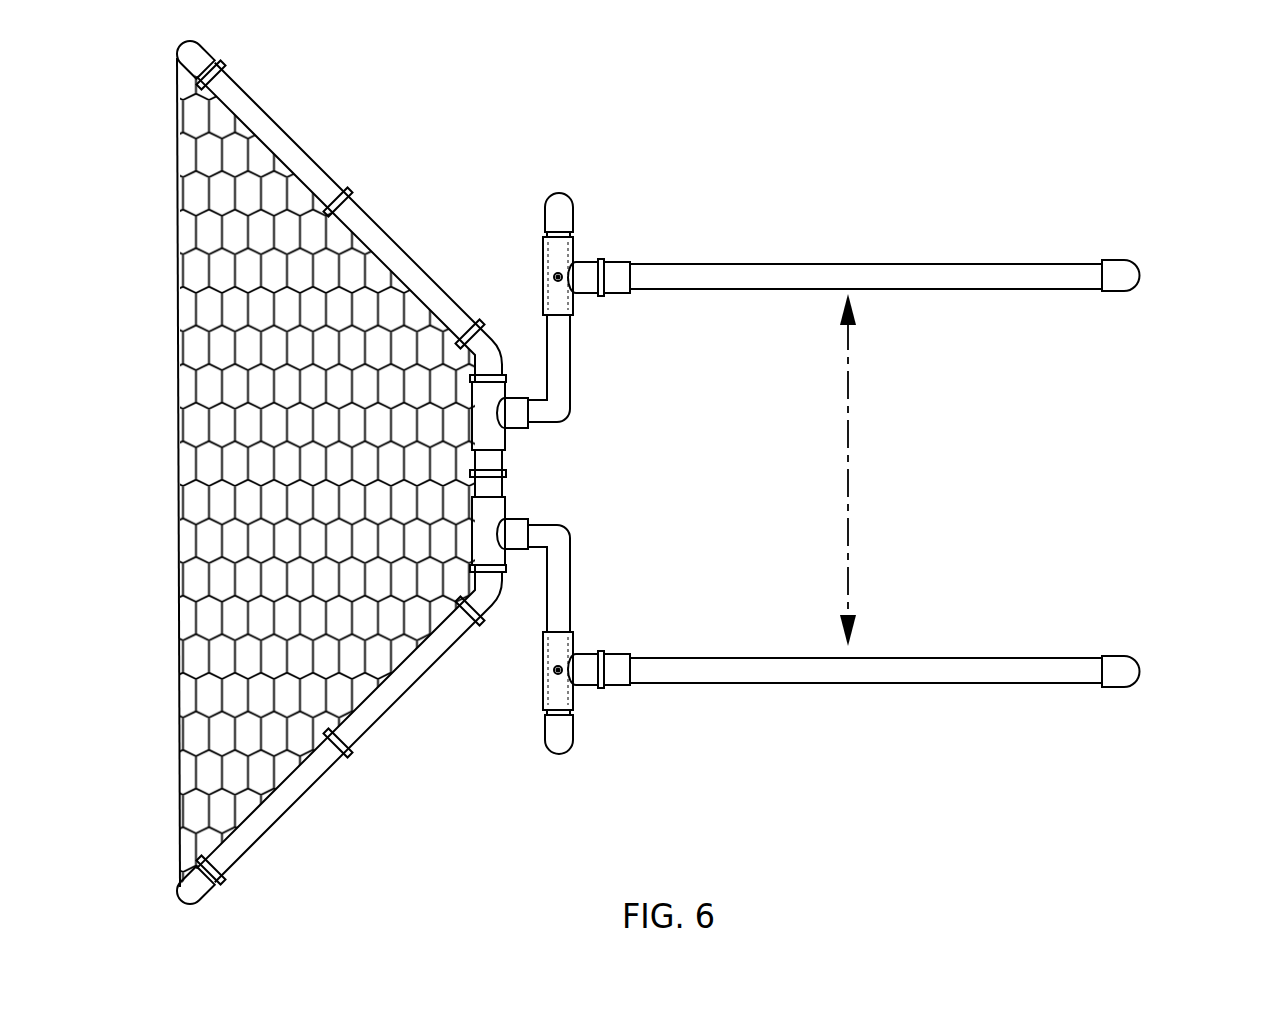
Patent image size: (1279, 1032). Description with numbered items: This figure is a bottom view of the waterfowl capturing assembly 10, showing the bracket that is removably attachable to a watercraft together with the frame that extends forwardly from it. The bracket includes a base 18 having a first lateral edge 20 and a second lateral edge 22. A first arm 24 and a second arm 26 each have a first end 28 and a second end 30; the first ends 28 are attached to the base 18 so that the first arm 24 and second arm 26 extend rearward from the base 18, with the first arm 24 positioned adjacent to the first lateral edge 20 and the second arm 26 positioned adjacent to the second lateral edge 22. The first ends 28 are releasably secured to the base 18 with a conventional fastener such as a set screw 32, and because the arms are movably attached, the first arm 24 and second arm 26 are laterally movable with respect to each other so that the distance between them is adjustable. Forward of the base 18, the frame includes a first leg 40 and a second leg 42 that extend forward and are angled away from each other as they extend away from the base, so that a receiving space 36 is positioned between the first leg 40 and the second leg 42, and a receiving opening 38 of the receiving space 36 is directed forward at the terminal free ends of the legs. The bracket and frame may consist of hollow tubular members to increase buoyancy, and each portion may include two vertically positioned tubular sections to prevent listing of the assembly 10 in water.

The waterfowl capturing assembly 10 is at (616, 104).
The base 18 is at (578, 598).
The first lateral edge 20 is at (558, 758).
The second lateral edge 22 is at (558, 192).
The first arm 24 is at (882, 684).
The second arm 26 is at (882, 264).
The first end 28 is at (552, 290).
The second end 30 is at (1142, 273).
The set screw 32 is at (562, 276).
The receiving space 36 is at (322, 497).
The receiving opening 38 is at (150, 460).
The first leg 40 is at (288, 807).
The second leg 42 is at (284, 137).